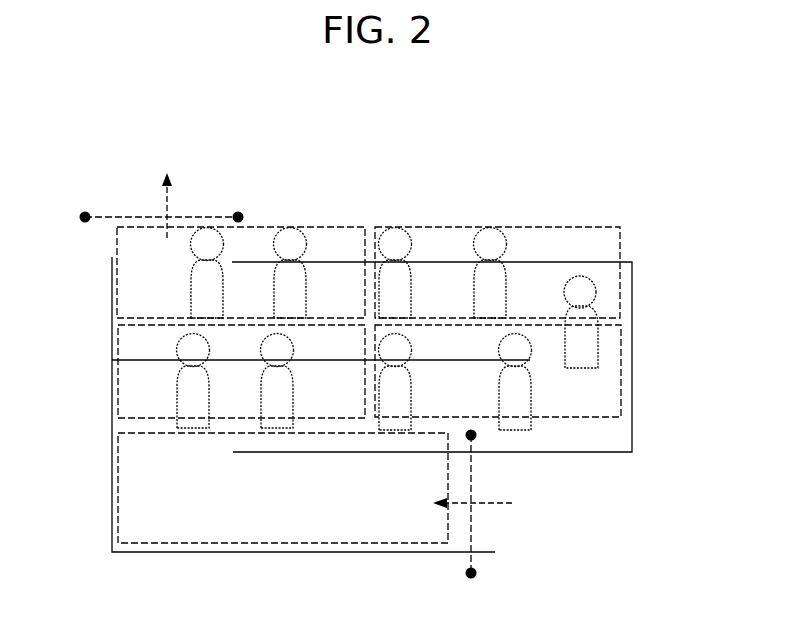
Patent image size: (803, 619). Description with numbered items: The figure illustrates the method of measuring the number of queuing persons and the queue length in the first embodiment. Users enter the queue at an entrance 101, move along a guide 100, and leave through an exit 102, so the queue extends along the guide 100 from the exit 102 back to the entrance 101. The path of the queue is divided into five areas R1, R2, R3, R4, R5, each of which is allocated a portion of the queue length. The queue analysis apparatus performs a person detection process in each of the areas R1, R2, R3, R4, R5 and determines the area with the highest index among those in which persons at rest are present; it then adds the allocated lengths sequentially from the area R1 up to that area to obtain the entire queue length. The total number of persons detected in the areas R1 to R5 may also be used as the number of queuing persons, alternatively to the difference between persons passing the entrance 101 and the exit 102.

The guide 100 is at (632, 283).
The entrance 101 is at (471, 483).
The exit 102 is at (207, 213).
The area R1 is at (335, 225).
The area R2 is at (590, 227).
The area R3 is at (622, 393).
The area R4 is at (117, 385).
The area R5 is at (115, 528).